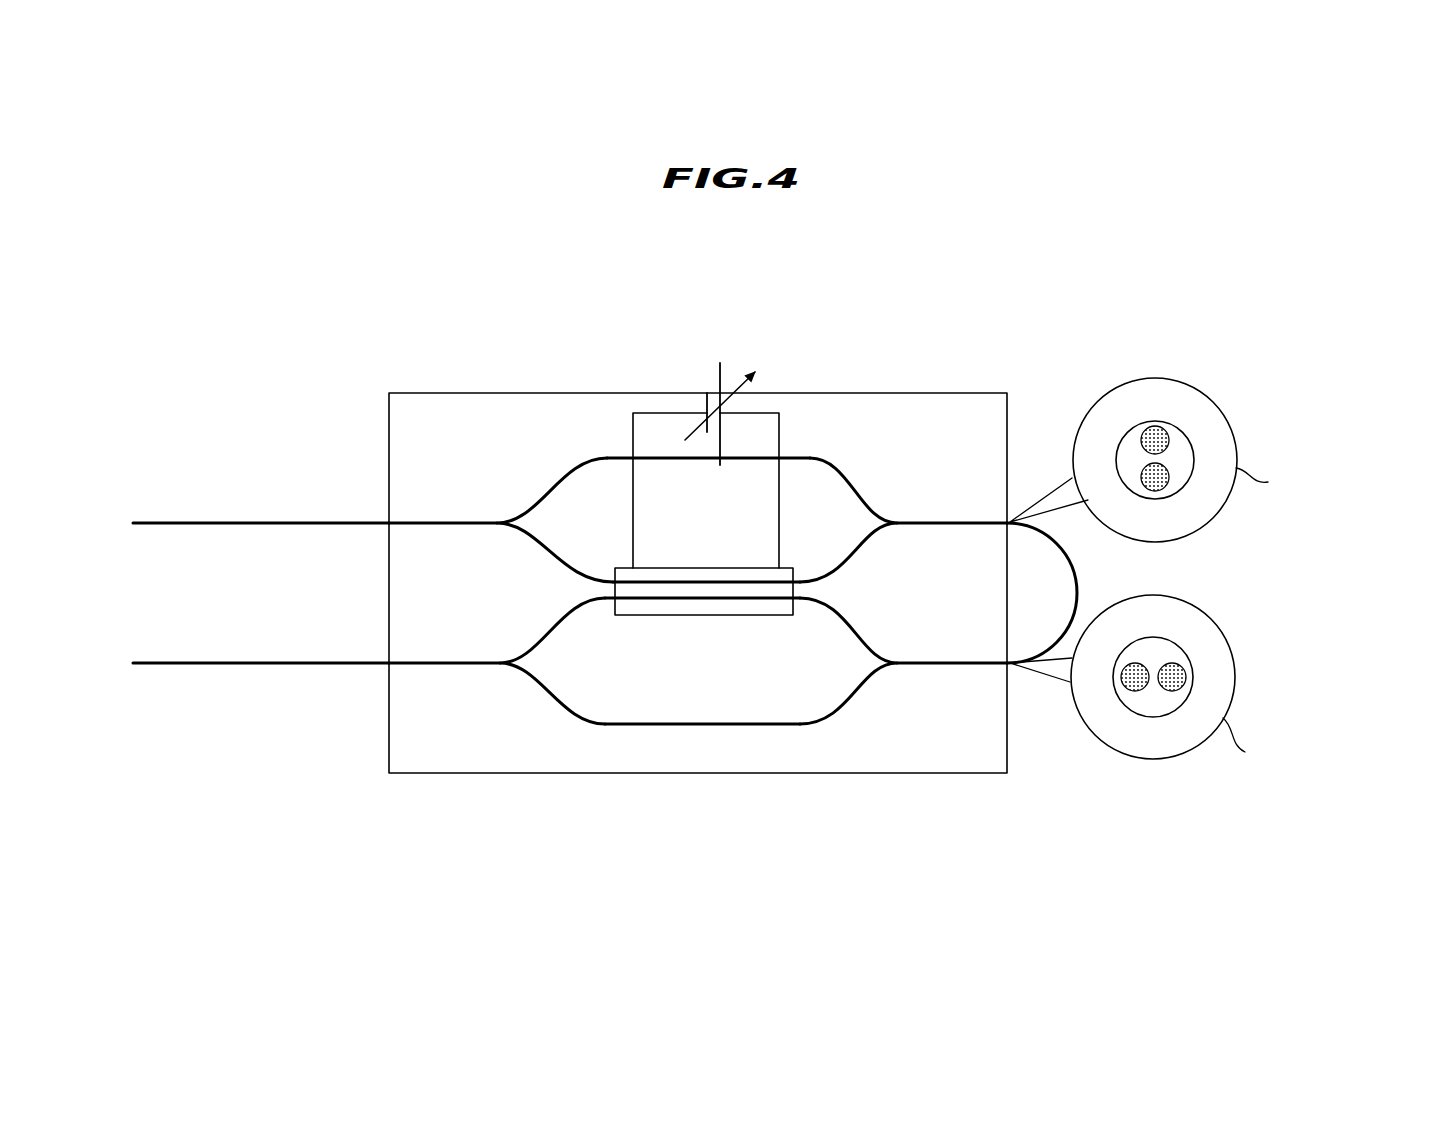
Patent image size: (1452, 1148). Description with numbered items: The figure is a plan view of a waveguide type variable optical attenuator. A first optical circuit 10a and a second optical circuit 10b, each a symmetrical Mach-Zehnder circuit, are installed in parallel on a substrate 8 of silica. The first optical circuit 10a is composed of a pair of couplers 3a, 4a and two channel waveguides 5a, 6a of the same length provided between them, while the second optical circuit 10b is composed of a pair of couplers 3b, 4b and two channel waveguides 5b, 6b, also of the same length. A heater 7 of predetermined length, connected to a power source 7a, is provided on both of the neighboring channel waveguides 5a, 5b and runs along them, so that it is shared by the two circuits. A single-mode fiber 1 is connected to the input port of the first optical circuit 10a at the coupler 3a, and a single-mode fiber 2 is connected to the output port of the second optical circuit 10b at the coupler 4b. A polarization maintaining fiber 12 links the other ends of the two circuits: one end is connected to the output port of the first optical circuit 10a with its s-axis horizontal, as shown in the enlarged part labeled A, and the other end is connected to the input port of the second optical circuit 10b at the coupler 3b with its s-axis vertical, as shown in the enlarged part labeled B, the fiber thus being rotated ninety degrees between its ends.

The single-mode fiber 1 is at (237, 522).
The single-mode fiber 2 is at (232, 666).
The coupler 3a is at (495, 520).
The coupler 3b is at (897, 665).
The coupler 4a is at (896, 498).
The coupler 4b is at (497, 666).
The channel waveguide 5a is at (847, 560).
The channel waveguide 5b is at (847, 630).
The channel waveguide 6a is at (842, 470).
The channel waveguide 6b is at (855, 698).
The heater 7 is at (647, 607).
The power source 7a is at (721, 406).
The substrate 8 is at (455, 748).
The first optical circuit 10a is at (698, 448).
The second optical circuit 10b is at (641, 702).
The polarization maintaining fiber 12 is at (1190, 655).